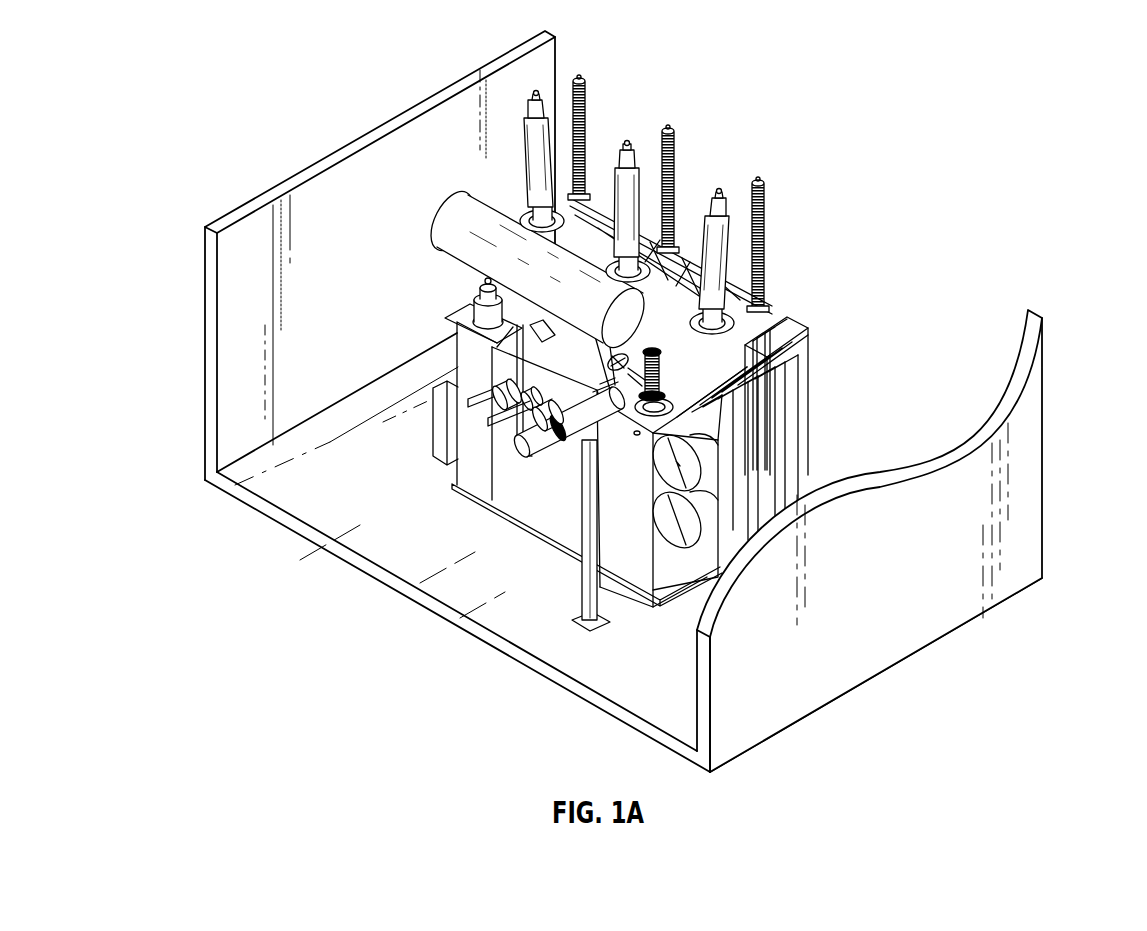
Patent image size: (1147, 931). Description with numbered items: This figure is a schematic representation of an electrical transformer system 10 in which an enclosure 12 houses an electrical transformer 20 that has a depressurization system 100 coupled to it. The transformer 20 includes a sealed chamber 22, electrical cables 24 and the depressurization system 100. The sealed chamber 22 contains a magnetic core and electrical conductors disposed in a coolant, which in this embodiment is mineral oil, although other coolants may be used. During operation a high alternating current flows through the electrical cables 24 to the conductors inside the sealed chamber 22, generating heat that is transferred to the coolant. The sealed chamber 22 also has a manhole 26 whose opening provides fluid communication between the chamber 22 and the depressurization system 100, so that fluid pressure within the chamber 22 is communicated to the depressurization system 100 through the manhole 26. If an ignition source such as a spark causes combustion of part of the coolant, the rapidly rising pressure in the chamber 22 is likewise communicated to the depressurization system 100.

The electrical transformer system 10 is at (200, 86).
The enclosure 12 is at (1025, 487).
The electrical transformer 20 is at (595, 341).
The sealed chamber 22 is at (508, 507).
The electrical cables 24 is at (540, 142).
The manhole 26 is at (646, 431).
The depressurization system 100 is at (494, 369).